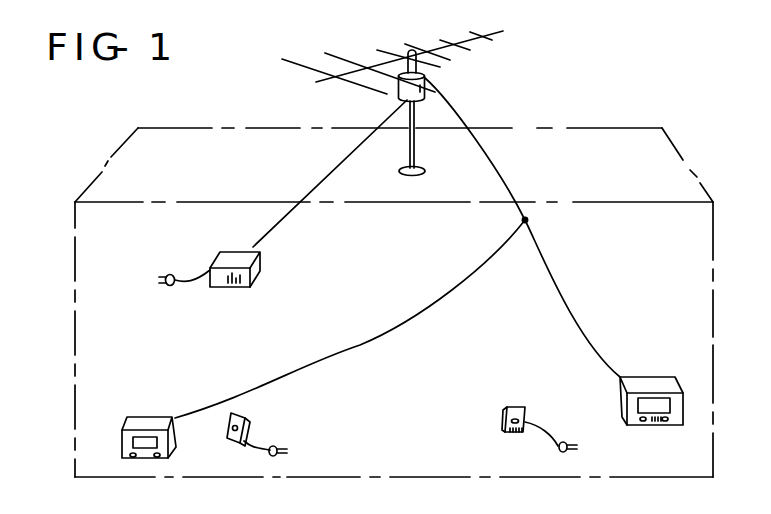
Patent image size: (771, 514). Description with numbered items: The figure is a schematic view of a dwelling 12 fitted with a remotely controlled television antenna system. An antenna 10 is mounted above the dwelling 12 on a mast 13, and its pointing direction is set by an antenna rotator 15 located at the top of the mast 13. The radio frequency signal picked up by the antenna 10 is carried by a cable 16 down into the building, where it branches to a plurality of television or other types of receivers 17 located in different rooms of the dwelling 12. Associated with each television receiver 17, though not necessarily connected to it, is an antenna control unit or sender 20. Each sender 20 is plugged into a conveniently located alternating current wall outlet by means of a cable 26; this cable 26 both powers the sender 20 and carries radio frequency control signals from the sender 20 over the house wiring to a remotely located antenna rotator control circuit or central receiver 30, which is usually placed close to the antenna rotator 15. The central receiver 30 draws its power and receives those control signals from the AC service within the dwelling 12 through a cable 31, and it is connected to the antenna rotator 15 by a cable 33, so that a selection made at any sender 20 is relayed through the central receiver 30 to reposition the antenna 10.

The antenna 10 is at (487, 37).
The dwelling 12 is at (608, 133).
The mast 13 is at (417, 142).
The antenna rotator 15 is at (425, 86).
The cable 16 is at (504, 181).
The television receivers 17 is at (142, 420).
The antenna control units 20 is at (245, 418).
The cable 26 is at (260, 448).
The central receiver 30 is at (257, 262).
The cable 31 is at (188, 283).
The cable 33 is at (329, 176).